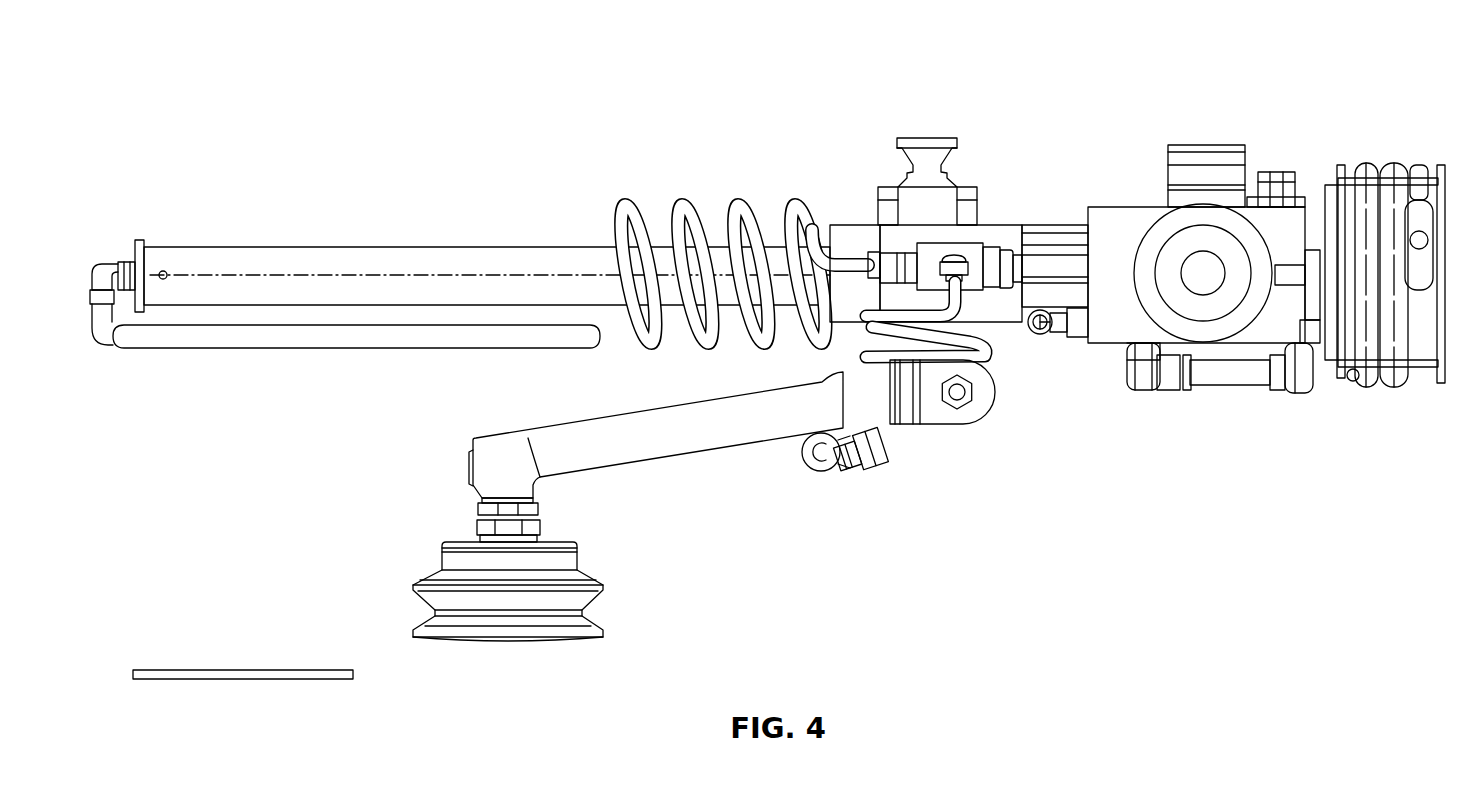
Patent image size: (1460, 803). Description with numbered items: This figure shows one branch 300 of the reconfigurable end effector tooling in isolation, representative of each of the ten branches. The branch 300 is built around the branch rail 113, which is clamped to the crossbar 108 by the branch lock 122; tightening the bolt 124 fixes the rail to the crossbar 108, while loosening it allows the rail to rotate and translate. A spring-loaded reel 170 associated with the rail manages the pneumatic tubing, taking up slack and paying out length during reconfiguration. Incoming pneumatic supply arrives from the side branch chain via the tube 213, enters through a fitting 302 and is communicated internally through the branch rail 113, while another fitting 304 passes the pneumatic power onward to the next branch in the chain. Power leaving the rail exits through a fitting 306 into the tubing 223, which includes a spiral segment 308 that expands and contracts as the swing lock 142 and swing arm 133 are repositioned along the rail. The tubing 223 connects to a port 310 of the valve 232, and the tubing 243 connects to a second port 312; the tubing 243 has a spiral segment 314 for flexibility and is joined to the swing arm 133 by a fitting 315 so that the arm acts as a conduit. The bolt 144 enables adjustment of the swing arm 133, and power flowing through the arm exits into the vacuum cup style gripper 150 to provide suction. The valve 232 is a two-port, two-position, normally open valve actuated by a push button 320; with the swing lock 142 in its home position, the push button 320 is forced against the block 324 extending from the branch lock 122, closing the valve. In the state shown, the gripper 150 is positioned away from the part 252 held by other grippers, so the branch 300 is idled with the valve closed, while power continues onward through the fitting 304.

The branch 300 is at (802, 60).
The branch rail 113 is at (277, 245).
The fitting 306 is at (108, 268).
The tubing 223 is at (265, 343).
The spiral segment 308 is at (680, 200).
The port 310 is at (903, 262).
The swing lock 142 is at (902, 258).
The bolt 144 is at (927, 150).
The valve 232 is at (977, 247).
The push button 320 is at (1025, 262).
The block 324 is at (1058, 260).
The second port 312 is at (937, 278).
The tubing 243 is at (963, 303).
The fitting 304 is at (1050, 338).
The branch lock 122 is at (1108, 205).
The bolt 124 is at (1268, 182).
The crossbar 108 is at (1213, 323).
The fitting 302 is at (1142, 390).
The tube 213 is at (1360, 173).
The reel 170 is at (1420, 367).
The swing arm 133 is at (613, 470).
The spiral segment 314 is at (907, 358).
The fitting 315 is at (883, 472).
The pneumatic gripper 150 is at (413, 585).
The part 252 is at (243, 670).